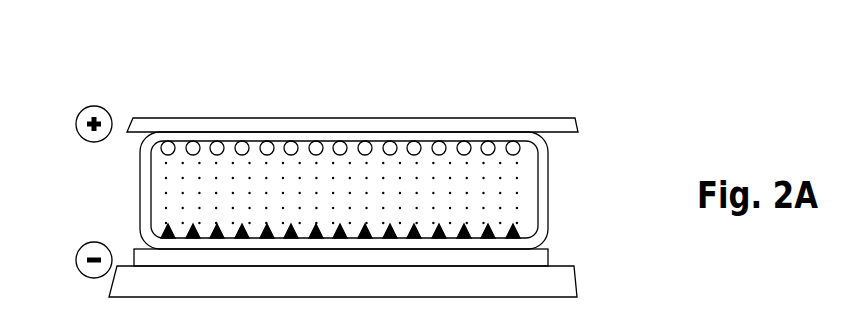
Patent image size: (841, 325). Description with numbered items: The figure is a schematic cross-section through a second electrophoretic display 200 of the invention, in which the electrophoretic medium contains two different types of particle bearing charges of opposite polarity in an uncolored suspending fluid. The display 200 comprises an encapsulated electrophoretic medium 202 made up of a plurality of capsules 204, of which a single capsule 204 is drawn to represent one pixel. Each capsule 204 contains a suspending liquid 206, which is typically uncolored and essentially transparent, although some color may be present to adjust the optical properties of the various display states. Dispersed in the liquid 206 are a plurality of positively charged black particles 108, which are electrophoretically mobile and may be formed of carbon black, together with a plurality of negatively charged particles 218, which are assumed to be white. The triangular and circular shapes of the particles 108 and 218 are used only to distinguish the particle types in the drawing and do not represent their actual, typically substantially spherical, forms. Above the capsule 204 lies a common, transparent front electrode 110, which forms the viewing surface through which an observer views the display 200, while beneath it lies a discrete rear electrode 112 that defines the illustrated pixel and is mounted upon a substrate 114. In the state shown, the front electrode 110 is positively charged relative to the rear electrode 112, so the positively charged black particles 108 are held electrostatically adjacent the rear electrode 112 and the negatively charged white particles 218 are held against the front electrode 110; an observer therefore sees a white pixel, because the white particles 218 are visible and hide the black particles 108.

The second electrophoretic display 200 is at (147, 52).
The positively charged black particles 108 is at (316, 228).
The front electrode 110 is at (382, 117).
The rear electrode 112 is at (548, 260).
The substrate 114 is at (577, 277).
The encapsulated electrophoretic medium 202 is at (569, 159).
The capsule 204 is at (547, 203).
The suspending liquid 206 is at (463, 198).
The negatively charged white particles 218 is at (238, 140).